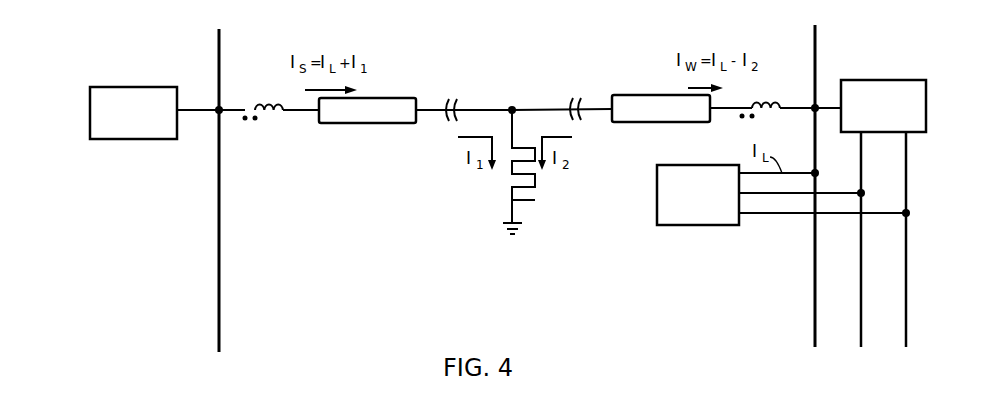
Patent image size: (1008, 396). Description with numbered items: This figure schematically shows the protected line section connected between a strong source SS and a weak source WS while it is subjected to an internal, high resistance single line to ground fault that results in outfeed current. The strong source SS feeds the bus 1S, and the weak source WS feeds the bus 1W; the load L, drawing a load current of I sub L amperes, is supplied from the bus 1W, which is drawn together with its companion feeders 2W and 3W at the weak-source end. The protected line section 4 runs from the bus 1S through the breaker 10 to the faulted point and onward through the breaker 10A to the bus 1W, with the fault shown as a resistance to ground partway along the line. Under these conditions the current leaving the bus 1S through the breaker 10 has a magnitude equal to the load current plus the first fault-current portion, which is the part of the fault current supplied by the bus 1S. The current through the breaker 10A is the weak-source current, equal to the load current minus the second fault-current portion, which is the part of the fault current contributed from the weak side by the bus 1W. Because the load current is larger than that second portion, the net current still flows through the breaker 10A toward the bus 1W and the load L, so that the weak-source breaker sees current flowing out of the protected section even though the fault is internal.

The strong source SS is at (139, 87).
The bus 1S is at (218, 212).
The breaker 10 is at (397, 97).
The transmission line 4 is at (479, 101).
The breaker 10A is at (632, 95).
The weak source WS is at (880, 80).
The load L is at (674, 165).
The bus 1W is at (818, 162).
The weak source bus 2W is at (864, 157).
The weak source bus 3W is at (908, 157).